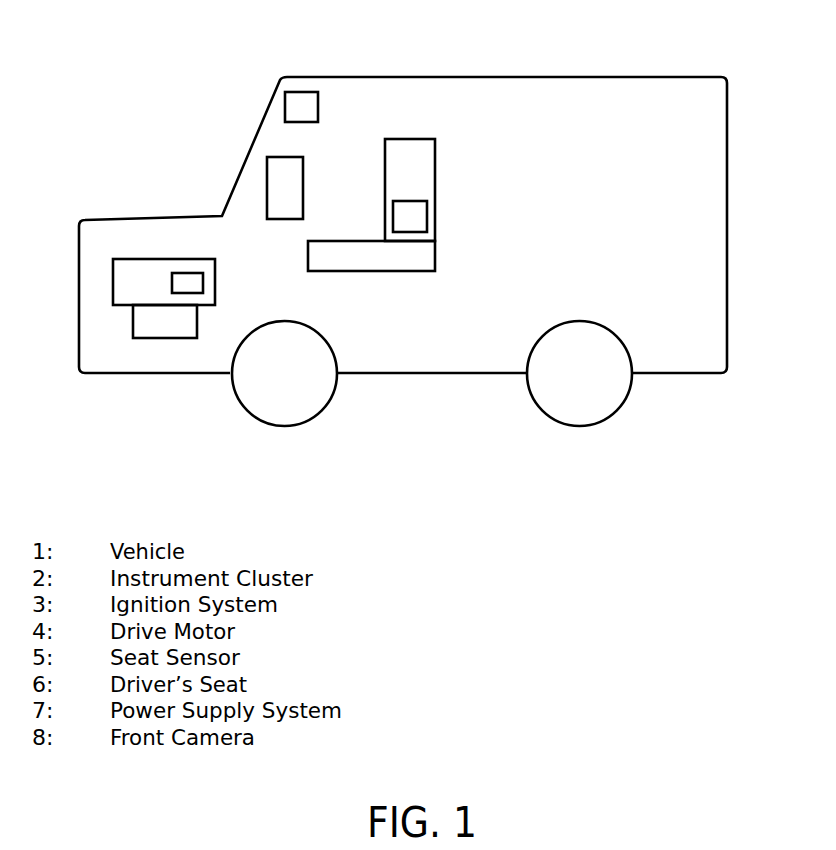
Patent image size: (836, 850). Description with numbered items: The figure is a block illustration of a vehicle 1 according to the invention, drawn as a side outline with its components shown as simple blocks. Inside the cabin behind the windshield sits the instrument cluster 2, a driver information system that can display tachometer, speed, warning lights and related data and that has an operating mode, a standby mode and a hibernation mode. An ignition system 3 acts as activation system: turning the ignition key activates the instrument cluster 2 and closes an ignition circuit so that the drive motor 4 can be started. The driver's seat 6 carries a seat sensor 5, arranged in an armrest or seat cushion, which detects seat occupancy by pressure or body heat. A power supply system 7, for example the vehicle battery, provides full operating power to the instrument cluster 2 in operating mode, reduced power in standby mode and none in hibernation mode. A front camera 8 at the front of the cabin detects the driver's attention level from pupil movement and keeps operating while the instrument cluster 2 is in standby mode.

The vehicle 1 is at (703, 53).
The instrument cluster 2 is at (272, 187).
The ignition system 3 is at (200, 283).
The drive motor 4 is at (123, 278).
The seat sensor 5 is at (422, 213).
The driver's seat 6 is at (422, 169).
The power supply system 7 is at (143, 322).
The front camera 8 is at (301, 91).